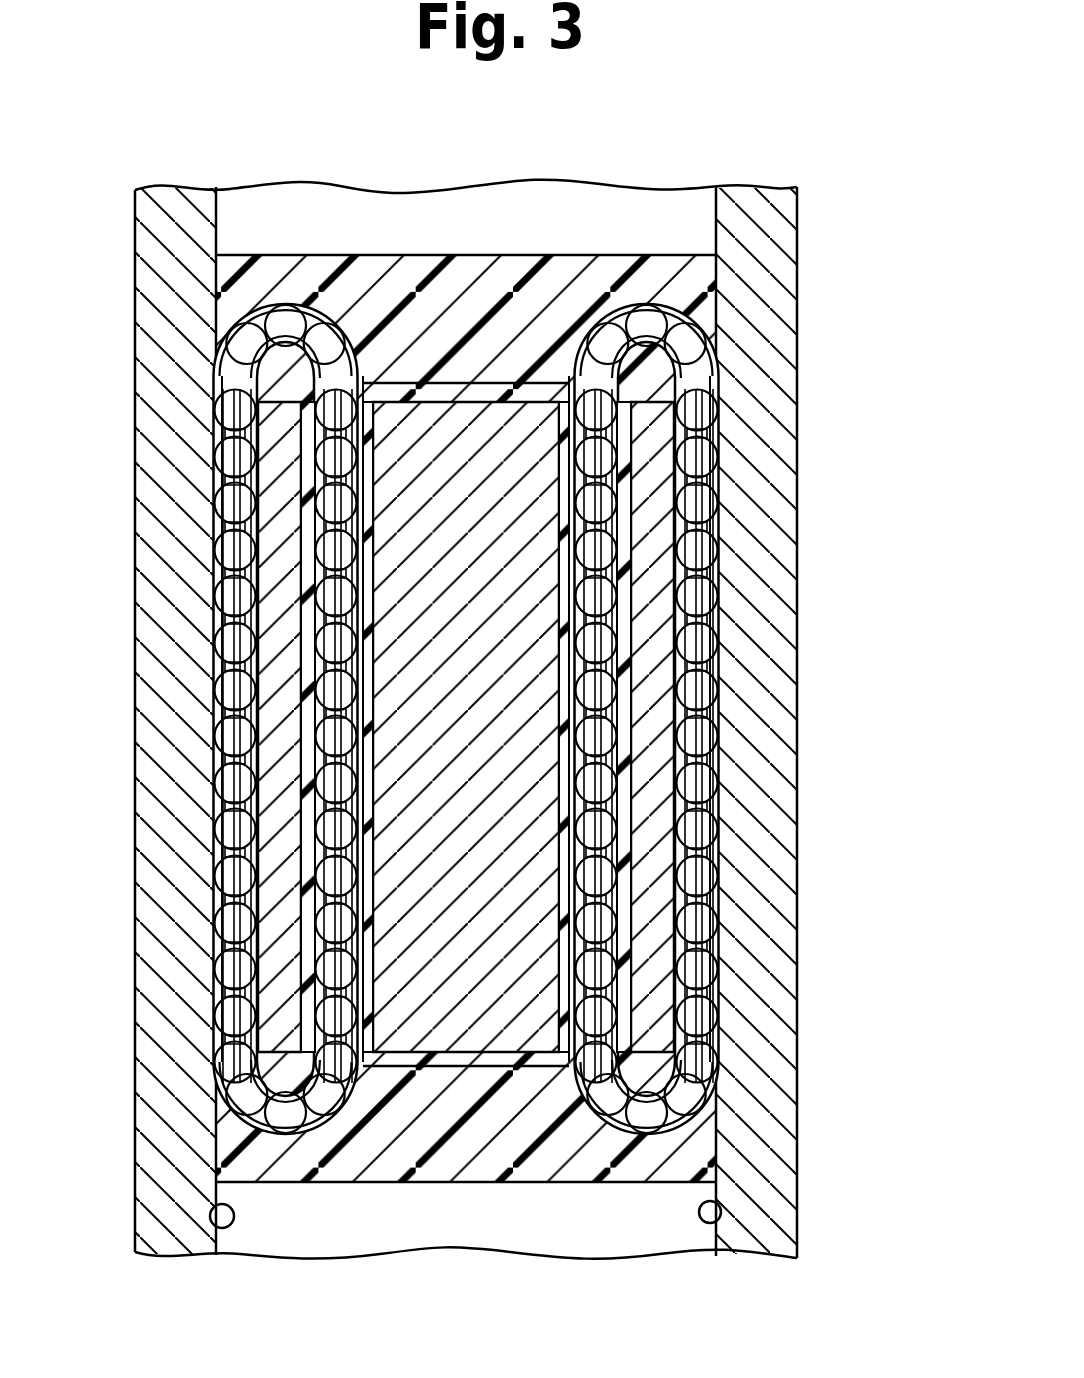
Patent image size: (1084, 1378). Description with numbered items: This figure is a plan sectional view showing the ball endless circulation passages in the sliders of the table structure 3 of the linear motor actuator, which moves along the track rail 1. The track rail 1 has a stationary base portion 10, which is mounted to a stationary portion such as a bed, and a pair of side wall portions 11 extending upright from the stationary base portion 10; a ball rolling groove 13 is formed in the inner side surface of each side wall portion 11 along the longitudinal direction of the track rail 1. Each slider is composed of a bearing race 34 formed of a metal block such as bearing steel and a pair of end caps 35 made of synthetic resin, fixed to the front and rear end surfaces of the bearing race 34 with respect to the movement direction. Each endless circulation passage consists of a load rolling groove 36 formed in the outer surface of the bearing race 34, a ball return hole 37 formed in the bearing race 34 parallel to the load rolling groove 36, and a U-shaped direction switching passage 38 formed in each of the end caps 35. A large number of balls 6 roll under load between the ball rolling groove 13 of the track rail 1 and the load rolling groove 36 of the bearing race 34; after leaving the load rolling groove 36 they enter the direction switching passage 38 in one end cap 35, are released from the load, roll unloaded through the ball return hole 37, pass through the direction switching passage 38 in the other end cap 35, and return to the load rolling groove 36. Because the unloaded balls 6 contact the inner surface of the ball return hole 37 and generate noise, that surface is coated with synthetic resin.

The track rail 1 is at (826, 707).
The table structure 3 is at (389, 1198).
The balls 6 is at (224, 800).
The stationary base portion 10 is at (602, 1238).
The side wall portion 11 is at (152, 1025).
The ball rolling groove 13 is at (213, 1212).
The bearing race 34 is at (277, 488).
The end cap 35 is at (462, 272).
The load rolling groove 36 is at (253, 602).
The ball return hole 37 is at (330, 912).
The direction switching passage 38 is at (300, 310).